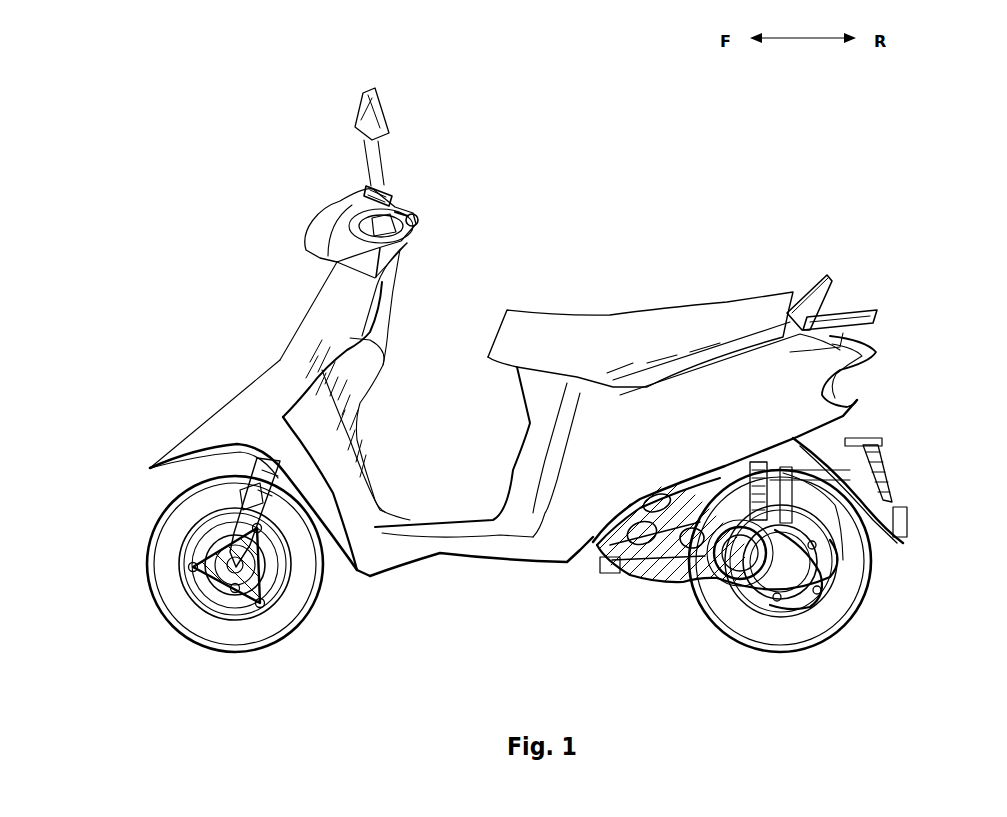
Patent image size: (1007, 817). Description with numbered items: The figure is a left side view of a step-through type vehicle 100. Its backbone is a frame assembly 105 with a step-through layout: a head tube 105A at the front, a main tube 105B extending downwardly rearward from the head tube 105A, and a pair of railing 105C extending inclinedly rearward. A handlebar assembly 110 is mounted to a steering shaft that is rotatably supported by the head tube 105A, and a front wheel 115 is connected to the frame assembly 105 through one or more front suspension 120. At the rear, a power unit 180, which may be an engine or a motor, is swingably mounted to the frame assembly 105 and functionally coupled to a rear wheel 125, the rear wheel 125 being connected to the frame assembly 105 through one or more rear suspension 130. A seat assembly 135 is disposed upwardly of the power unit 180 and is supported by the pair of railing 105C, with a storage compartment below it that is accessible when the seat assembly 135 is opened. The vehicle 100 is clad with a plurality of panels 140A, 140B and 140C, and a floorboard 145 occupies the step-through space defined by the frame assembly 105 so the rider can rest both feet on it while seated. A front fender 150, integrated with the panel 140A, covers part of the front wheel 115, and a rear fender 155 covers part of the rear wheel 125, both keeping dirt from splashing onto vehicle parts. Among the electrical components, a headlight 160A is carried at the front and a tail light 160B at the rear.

The vehicle 100 is at (98, 249).
The frame assembly 105 is at (329, 416).
The head tube 105A is at (305, 361).
The main tube 105B is at (370, 533).
The pair of railing 105C is at (708, 347).
The handlebar assembly 110 is at (414, 217).
The front wheel 115 is at (180, 527).
The front suspension 120 is at (255, 488).
The rear wheel 125 is at (843, 573).
The rear suspension 130 is at (735, 498).
The seat assembly 135 is at (607, 348).
The panel 140A is at (298, 314).
The panel 140B is at (543, 463).
The panel 140C is at (790, 387).
The floorboard 145 is at (410, 537).
The front fender 150 is at (212, 420).
The rear fender 155 is at (820, 452).
The headlight 160A is at (317, 215).
The tail light 160B is at (840, 388).
The power unit 180 is at (737, 553).